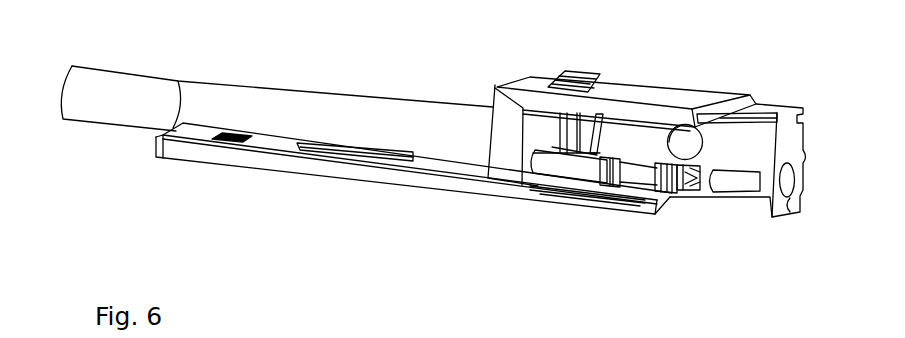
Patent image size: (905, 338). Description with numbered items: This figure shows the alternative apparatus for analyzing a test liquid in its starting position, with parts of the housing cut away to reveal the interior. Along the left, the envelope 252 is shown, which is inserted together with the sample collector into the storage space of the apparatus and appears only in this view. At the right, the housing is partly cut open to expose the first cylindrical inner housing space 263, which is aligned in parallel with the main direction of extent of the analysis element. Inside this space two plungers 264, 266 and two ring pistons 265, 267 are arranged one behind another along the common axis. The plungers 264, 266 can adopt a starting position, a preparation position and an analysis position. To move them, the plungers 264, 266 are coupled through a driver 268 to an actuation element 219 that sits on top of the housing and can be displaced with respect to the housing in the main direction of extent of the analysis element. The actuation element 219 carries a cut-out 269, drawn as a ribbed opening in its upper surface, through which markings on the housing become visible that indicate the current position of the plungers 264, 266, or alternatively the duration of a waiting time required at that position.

The envelope 252 is at (331, 98).
The actuation element 219 is at (513, 98).
The cut-out 269 is at (620, 76).
The plunger 266 is at (613, 153).
The driver 268 is at (580, 135).
The plunger 264 is at (602, 173).
The ring piston 265 is at (660, 193).
The ring piston 267 is at (694, 190).
The first cylindrical inner housing space 263 is at (713, 183).